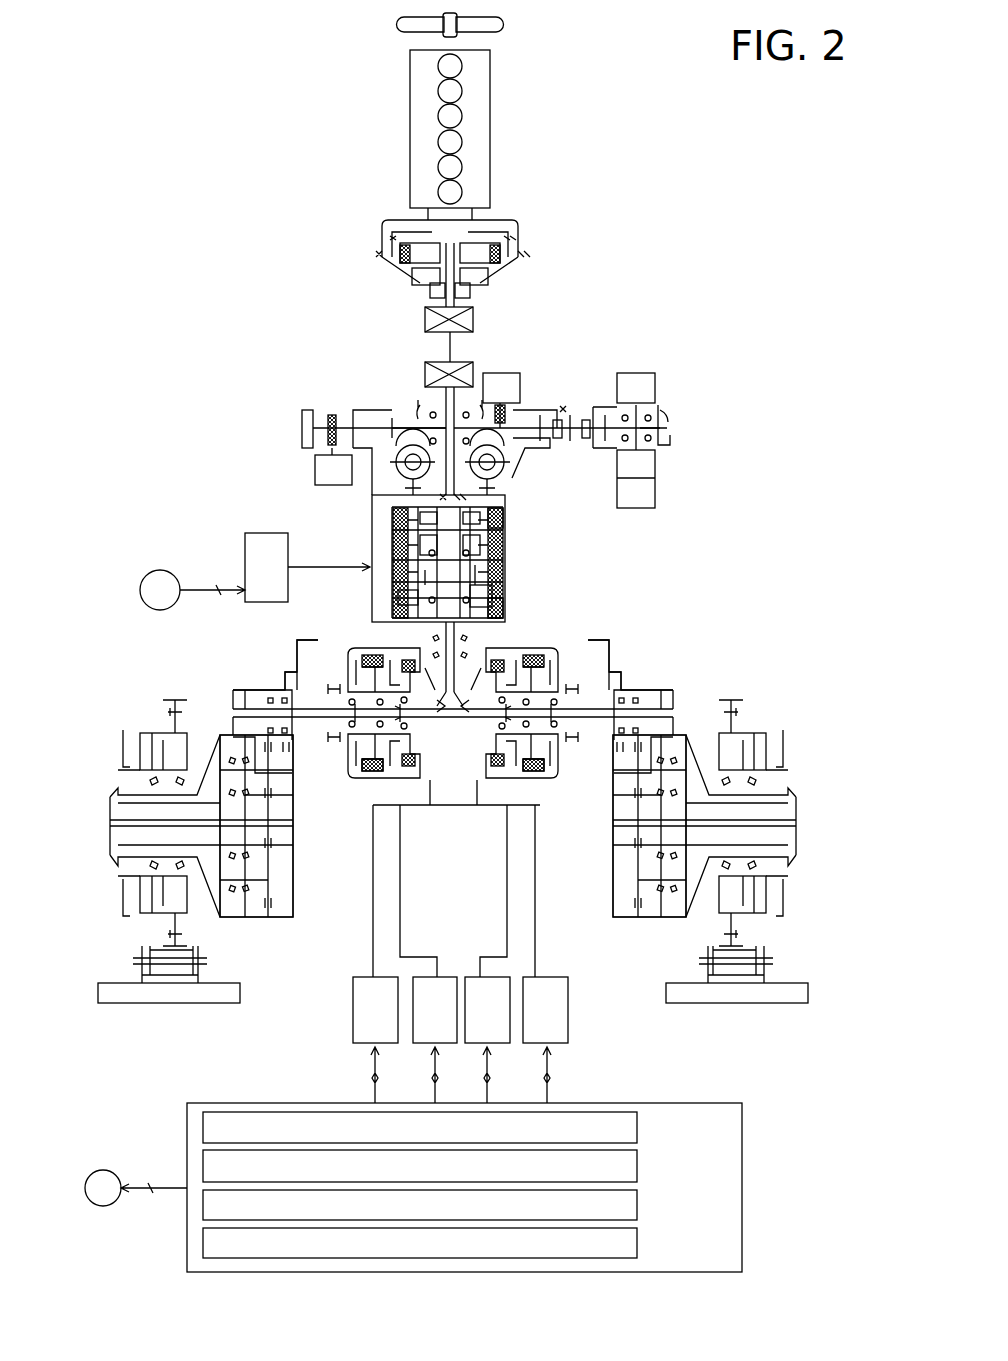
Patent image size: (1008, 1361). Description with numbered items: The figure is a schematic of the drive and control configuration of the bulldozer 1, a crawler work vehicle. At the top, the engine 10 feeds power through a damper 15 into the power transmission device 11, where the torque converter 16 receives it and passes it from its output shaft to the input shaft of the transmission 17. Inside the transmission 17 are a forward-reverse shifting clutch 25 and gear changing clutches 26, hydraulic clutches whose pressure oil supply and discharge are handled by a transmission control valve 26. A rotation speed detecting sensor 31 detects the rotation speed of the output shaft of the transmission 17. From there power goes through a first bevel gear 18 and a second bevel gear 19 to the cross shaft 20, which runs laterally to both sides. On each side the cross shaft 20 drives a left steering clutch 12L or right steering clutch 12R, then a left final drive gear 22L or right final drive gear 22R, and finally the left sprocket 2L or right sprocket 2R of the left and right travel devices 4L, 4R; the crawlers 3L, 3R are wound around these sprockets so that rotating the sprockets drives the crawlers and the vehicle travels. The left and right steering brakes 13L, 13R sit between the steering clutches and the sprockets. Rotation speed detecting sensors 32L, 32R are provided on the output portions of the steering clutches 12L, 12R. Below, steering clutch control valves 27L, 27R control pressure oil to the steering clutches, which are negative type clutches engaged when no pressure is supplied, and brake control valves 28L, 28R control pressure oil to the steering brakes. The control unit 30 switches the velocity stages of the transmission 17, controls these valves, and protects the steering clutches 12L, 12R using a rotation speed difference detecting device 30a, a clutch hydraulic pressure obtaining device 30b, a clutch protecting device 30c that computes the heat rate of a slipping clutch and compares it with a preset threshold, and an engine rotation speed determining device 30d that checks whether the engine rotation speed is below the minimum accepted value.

The bulldozer 1 is at (276, 152).
The engine 10 is at (492, 133).
The damper 15 is at (522, 243).
The torque converter 16 is at (386, 467).
The transmission 17 is at (377, 536).
The power transmission device 11 is at (433, 540).
The forward-reverse shifting clutch 25 is at (515, 516).
The gear changing clutches / transmission control valve 26 is at (225, 542).
The rotation speed detecting sensor 31 is at (522, 614).
The left steering clutch 12L is at (370, 637).
The right steering clutch 12R is at (543, 648).
The left steering brake 13L is at (351, 637).
The right steering brake 13R is at (564, 653).
The rotation speed detecting sensor 32L is at (359, 781).
The rotation speed detecting sensor 32R is at (561, 781).
The first bevel gear 18 is at (442, 805).
The second bevel gear 19 is at (473, 803).
The cross shaft 20 is at (450, 805).
The left travel device 4L is at (99, 845).
The right travel device 4R is at (821, 902).
The left final drive gear 22L is at (277, 921).
The right final drive gear 22R is at (645, 921).
The left sprocket 2L is at (151, 936).
The right sprocket 2R is at (762, 936).
The left crawler 3L is at (172, 1000).
The right crawler 3R is at (738, 1003).
The brake control valve 28L is at (362, 1043).
The steering clutch control valve 27L is at (427, 1043).
The steering clutch control valve 27R is at (500, 1047).
The brake control valve 28R is at (560, 1047).
The control unit 30 is at (449, 1187).
The rotation speed difference detecting device 30a is at (637, 1128).
The clutch hydraulic pressure obtaining device 30b is at (637, 1166).
The clutch protecting device 30c is at (637, 1205).
The engine rotation speed determining device 30d is at (637, 1243).